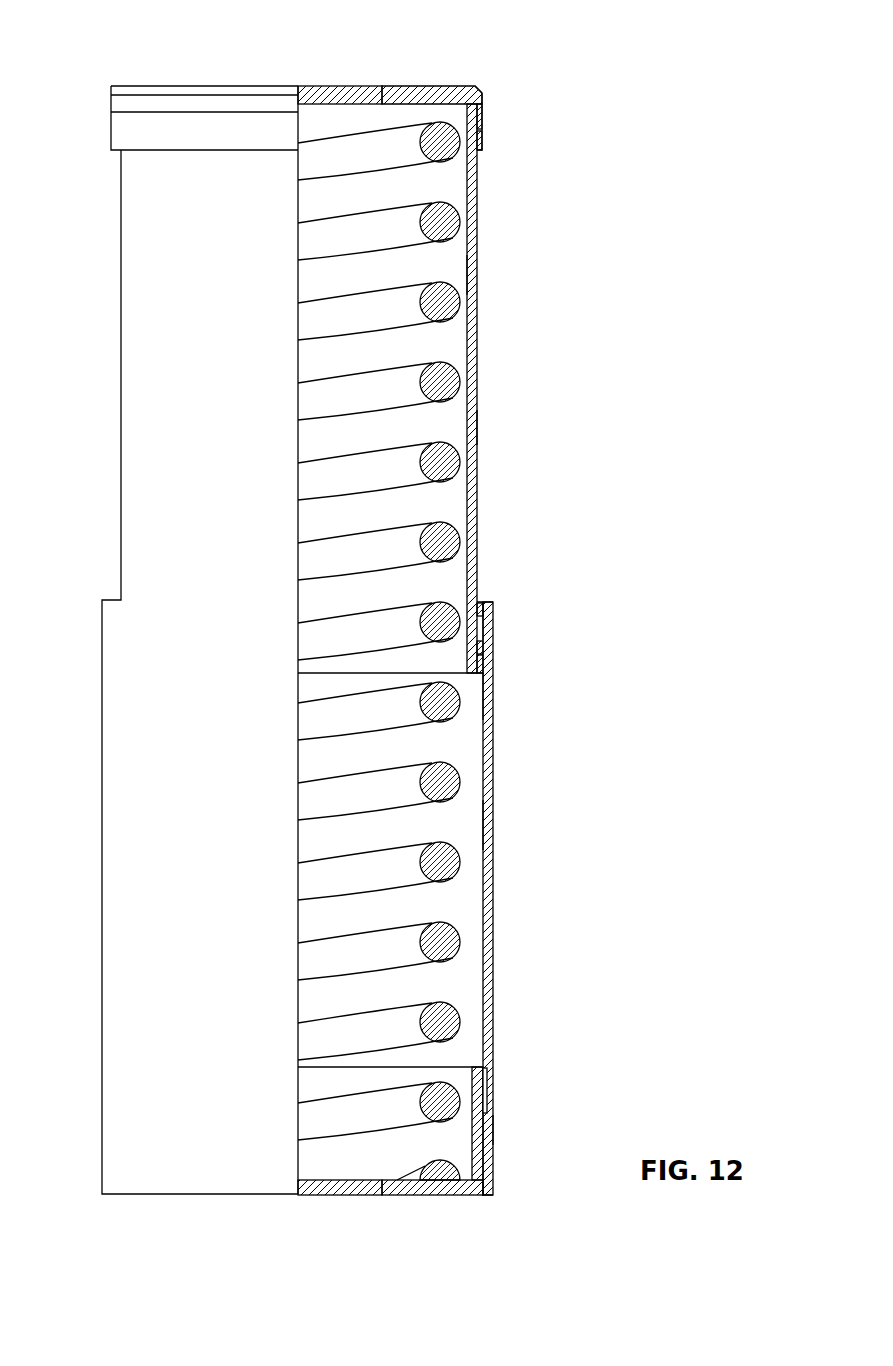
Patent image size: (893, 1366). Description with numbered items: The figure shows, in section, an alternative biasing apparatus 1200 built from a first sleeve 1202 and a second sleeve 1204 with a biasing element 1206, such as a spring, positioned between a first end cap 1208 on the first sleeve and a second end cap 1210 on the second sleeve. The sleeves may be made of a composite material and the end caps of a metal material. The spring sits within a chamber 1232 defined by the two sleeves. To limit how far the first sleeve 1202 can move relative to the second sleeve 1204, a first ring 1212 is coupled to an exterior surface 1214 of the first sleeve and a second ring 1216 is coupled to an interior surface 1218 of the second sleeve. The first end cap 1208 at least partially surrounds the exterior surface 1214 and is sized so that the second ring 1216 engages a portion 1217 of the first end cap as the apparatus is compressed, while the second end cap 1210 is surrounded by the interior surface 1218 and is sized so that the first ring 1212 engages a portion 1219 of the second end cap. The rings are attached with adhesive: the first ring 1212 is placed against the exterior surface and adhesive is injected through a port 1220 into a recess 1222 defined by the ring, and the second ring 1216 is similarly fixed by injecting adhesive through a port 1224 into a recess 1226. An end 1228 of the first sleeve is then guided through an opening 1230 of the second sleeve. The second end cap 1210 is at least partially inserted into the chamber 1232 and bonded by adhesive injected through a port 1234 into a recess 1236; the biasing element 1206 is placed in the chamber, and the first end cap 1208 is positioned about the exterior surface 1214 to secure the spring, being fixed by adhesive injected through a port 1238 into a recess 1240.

The biasing apparatus 1200 is at (652, 40).
The first sleeve 1202 is at (474, 336).
The second sleeve 1204 is at (488, 948).
The biasing element 1206 is at (498, 211).
The first end cap 1208 is at (393, 86).
The second end cap 1210 is at (400, 1197).
The first ring 1212 is at (490, 698).
The exterior surface 1214 is at (476, 280).
The second ring 1216 is at (478, 600).
The portion of the first end cap 1217 is at (111, 150).
The interior surface 1218 is at (488, 832).
The portion of the second end cap 1219 is at (478, 1068).
The port 1220 is at (490, 657).
The recess 1222 is at (495, 645).
The port 1224 is at (493, 615).
The recess 1226 is at (490, 603).
The end of the first sleeve 1228 is at (470, 92).
The opening 1230 is at (492, 1196).
The chamber 1232 is at (470, 430).
The port 1234 is at (493, 1128).
The recess 1236 is at (488, 1108).
The port 1238 is at (527, 113).
The recess 1240 is at (518, 152).